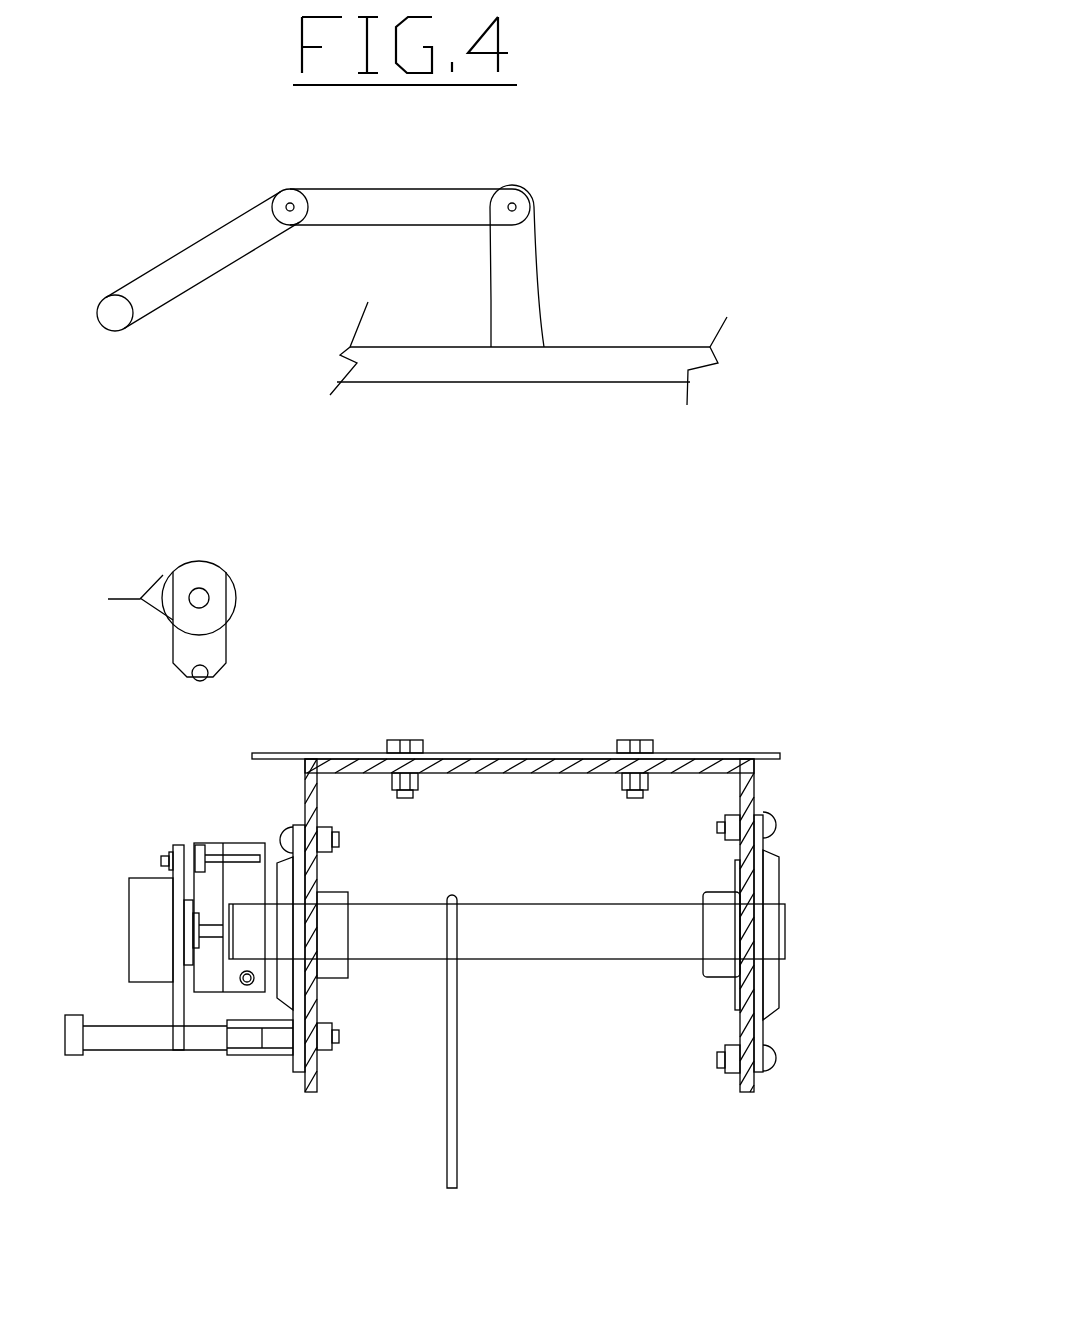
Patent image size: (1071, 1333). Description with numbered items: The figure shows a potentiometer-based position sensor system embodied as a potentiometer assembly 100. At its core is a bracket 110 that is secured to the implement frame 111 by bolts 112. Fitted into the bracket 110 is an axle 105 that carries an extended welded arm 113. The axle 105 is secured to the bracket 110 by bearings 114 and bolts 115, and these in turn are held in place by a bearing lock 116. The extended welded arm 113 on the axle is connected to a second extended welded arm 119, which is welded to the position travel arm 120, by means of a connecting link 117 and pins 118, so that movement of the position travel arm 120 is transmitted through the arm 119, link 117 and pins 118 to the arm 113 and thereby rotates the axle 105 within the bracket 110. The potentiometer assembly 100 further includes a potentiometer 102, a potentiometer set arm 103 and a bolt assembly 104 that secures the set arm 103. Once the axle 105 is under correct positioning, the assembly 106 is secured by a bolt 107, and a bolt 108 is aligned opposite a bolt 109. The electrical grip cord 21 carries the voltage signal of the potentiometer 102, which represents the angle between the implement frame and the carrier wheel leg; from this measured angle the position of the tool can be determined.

The potentiometer assembly 100 is at (135, 448).
The electrical grip cord 21 is at (126, 617).
The potentiometer 102 is at (183, 763).
The potentiometer set arm 103 is at (210, 811).
The bolt assembly 104 is at (146, 883).
The axle 105 is at (441, 659).
The assembly 106 is at (224, 880).
The bolt 107 is at (229, 1072).
The bolt 108 is at (197, 829).
The bolt 109 is at (128, 861).
The bracket 110 is at (579, 925).
The implement frame 111 is at (521, 732).
The bolts 112 is at (595, 730).
The extended welded arm 113 is at (326, 673).
The bearings 114 is at (590, 942).
The bolts 115 is at (614, 961).
The bearing lock 116 is at (528, 975).
The connecting link 117 is at (410, 167).
The pins 118 is at (468, 178).
The extended welded arm 119 is at (566, 266).
The position travel arm 120 is at (530, 387).